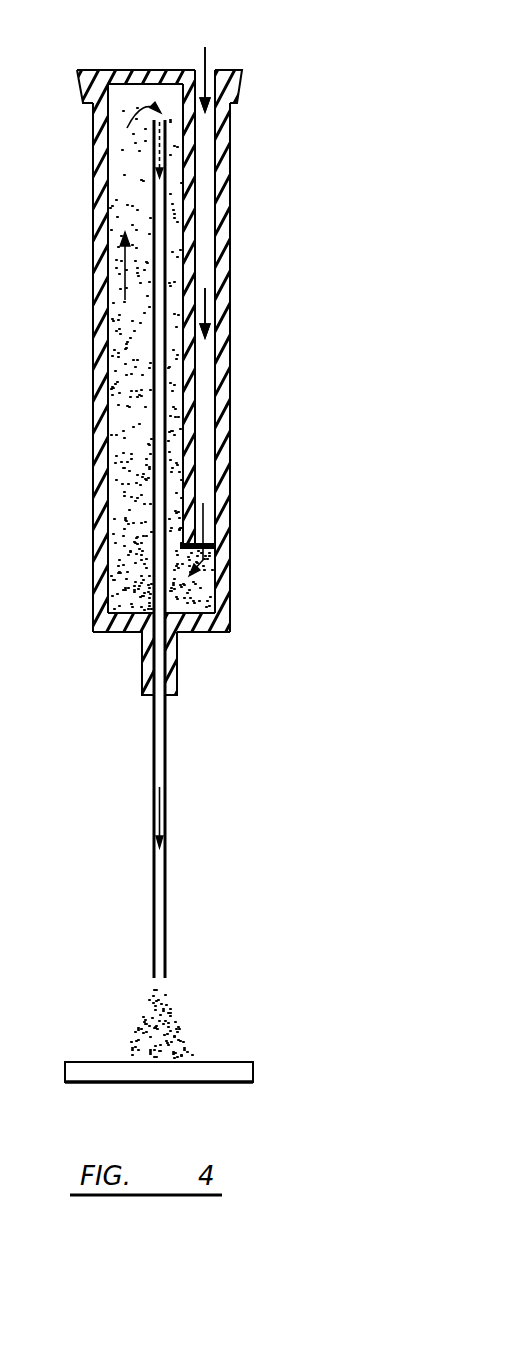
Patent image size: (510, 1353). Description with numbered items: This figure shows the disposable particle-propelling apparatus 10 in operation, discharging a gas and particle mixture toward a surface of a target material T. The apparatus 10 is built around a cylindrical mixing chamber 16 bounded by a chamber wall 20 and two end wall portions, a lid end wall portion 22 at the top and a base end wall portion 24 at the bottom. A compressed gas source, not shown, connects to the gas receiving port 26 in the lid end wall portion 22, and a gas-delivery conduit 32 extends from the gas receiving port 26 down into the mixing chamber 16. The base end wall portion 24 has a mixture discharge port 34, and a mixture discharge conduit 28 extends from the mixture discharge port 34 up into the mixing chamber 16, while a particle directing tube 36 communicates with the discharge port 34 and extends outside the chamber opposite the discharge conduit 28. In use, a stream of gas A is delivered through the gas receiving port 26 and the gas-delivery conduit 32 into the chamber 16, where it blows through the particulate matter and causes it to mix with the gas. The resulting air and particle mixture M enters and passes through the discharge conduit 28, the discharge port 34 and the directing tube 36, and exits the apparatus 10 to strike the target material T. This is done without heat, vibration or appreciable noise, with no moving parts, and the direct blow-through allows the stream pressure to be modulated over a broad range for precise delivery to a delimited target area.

The particle-propelling apparatus 10 is at (260, 186).
The mixing chamber 16 is at (117, 267).
The chamber wall 20 is at (93, 387).
The end wall portion 22 is at (121, 70).
The end wall portion 24 is at (112, 635).
The gas receiving port 26 is at (210, 80).
The mixture discharge conduit 28 is at (157, 180).
The gas-delivery conduit 32 is at (202, 405).
The mixture discharge port 34 is at (170, 608).
The particle directing tube 36 is at (166, 762).
The stream of gas A is at (215, 308).
The air and particle mixture M is at (123, 150).
The target material T is at (243, 1062).